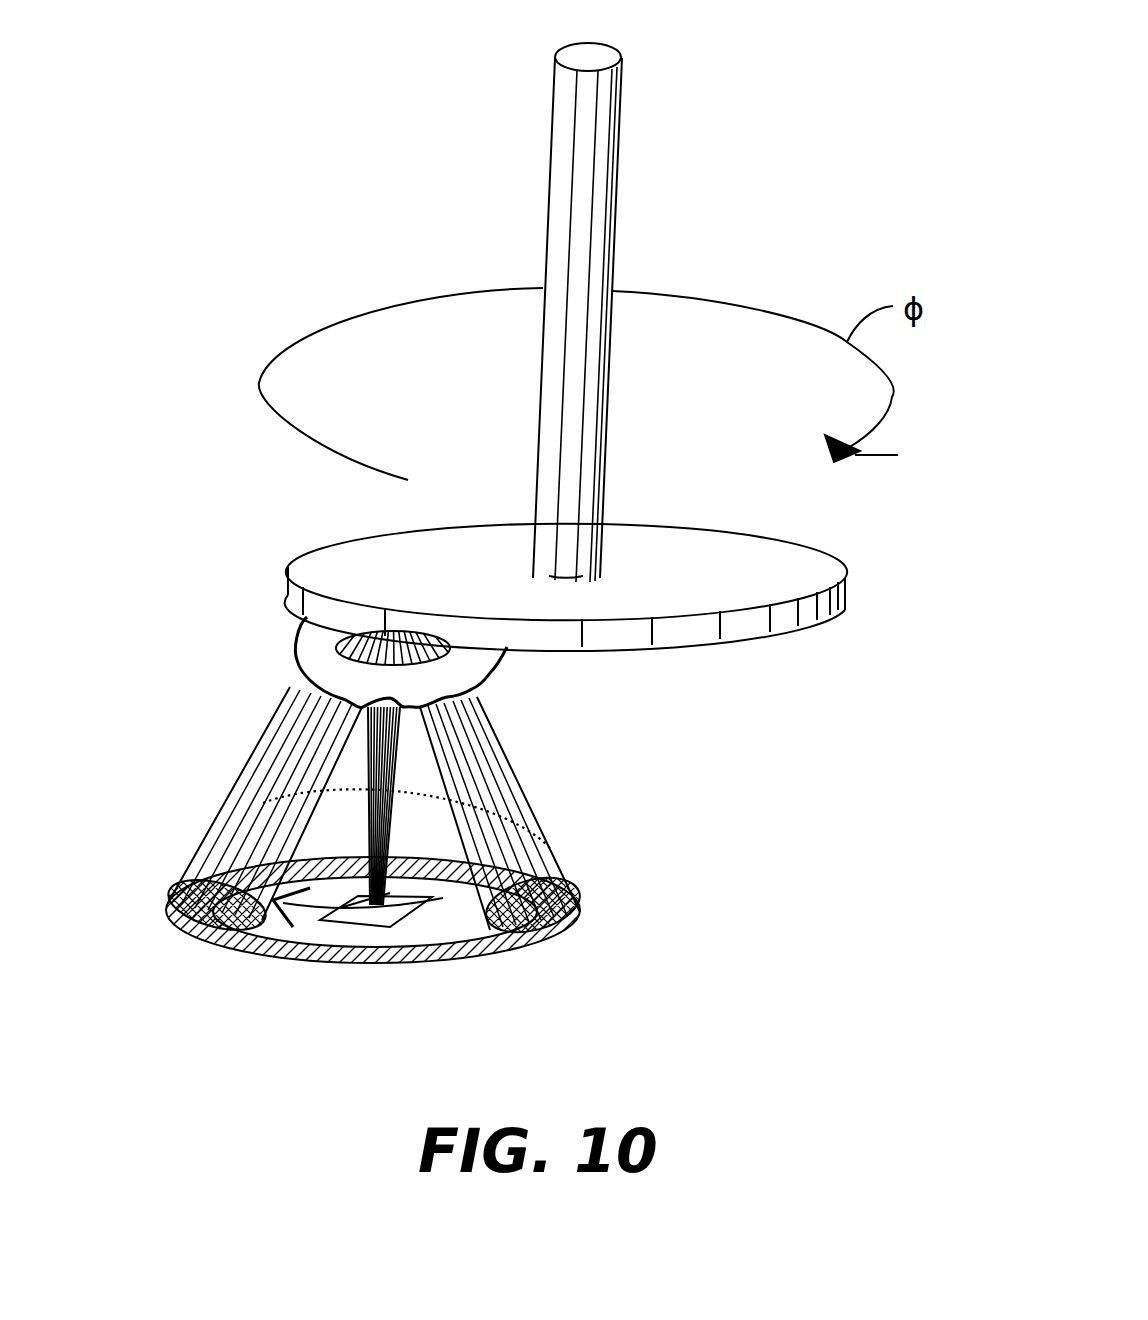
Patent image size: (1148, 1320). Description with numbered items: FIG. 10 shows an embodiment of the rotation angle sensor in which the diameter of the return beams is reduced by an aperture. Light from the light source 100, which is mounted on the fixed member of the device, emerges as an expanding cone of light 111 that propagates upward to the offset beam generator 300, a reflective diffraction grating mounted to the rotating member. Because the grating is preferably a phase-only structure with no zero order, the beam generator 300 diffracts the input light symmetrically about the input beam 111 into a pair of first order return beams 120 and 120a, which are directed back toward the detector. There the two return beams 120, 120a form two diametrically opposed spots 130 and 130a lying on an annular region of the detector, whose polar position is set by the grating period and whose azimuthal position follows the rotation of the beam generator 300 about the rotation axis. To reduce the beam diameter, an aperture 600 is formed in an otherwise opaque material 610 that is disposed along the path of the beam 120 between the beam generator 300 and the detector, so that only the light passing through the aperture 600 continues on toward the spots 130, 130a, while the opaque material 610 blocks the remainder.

The offset beam generator 300 is at (328, 562).
The aperture 600 is at (303, 638).
The opaque material 610 is at (308, 667).
The expanding cone of light 111 is at (400, 733).
The return beam 120 is at (253, 773).
The return beam 120a is at (500, 745).
The spot 130 is at (190, 927).
The spot 130a is at (577, 923).
The light source 100 is at (367, 920).